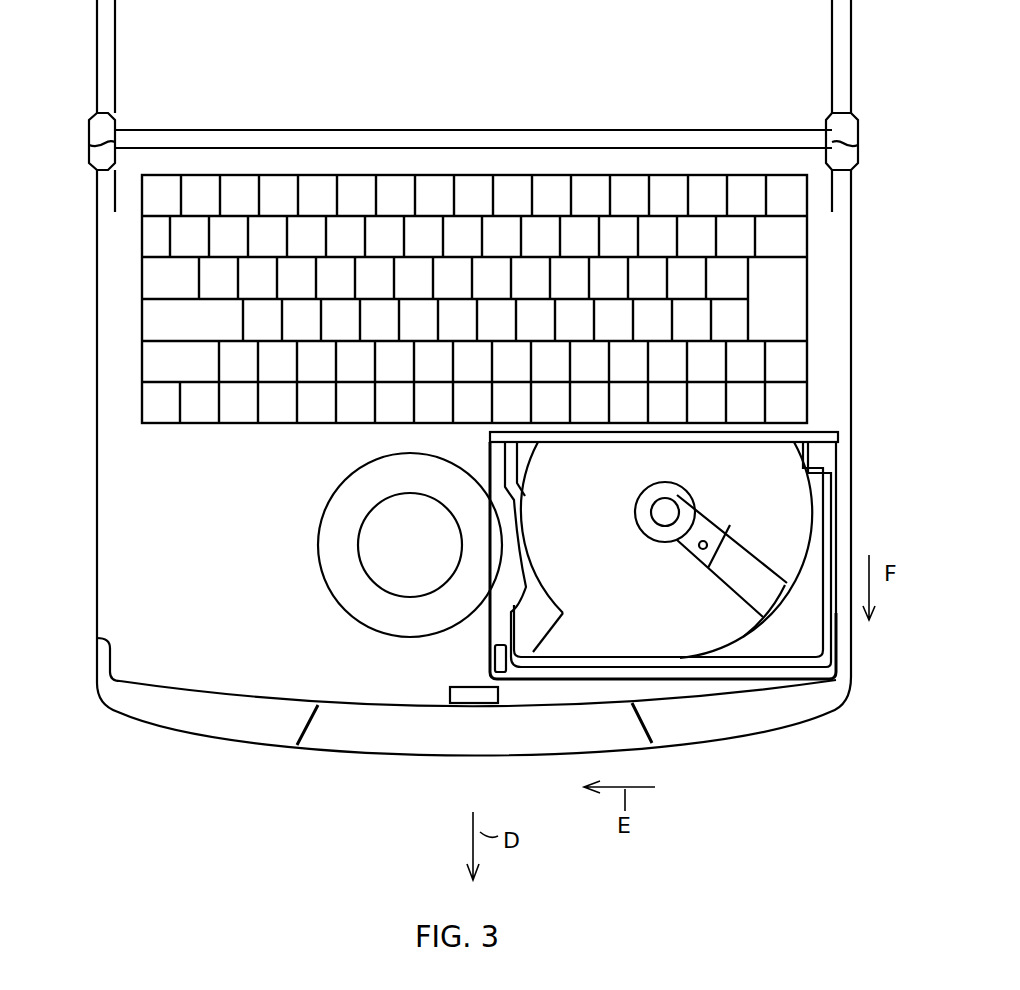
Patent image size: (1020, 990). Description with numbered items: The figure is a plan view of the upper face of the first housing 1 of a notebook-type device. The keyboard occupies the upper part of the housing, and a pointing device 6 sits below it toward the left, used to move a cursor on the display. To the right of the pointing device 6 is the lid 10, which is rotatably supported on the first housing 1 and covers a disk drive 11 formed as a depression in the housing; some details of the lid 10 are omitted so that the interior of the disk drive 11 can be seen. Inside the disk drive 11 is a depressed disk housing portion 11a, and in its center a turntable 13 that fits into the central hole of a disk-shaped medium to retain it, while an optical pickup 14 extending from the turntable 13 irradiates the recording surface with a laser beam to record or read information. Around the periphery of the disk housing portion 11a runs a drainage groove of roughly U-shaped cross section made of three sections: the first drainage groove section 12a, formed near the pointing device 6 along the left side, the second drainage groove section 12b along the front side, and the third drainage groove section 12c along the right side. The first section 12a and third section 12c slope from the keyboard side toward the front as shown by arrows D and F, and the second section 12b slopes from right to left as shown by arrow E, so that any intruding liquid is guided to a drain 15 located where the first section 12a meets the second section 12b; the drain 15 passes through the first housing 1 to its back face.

The first housing 1 is at (835, 377).
The pointing device 6 is at (388, 547).
The lid 10 is at (838, 440).
The disk drive 11 is at (778, 545).
The depressed disk housing portion 11a is at (729, 617).
The first drainage groove section 12a is at (502, 632).
The second drainage groove section 12b is at (705, 677).
The third drainage groove section 12c is at (836, 615).
The turntable 13 is at (690, 486).
The optical pickup 14 is at (715, 533).
The drain 15 is at (506, 675).